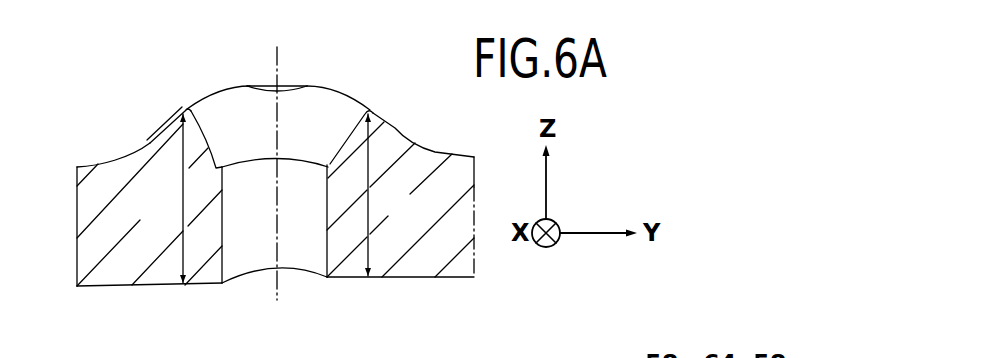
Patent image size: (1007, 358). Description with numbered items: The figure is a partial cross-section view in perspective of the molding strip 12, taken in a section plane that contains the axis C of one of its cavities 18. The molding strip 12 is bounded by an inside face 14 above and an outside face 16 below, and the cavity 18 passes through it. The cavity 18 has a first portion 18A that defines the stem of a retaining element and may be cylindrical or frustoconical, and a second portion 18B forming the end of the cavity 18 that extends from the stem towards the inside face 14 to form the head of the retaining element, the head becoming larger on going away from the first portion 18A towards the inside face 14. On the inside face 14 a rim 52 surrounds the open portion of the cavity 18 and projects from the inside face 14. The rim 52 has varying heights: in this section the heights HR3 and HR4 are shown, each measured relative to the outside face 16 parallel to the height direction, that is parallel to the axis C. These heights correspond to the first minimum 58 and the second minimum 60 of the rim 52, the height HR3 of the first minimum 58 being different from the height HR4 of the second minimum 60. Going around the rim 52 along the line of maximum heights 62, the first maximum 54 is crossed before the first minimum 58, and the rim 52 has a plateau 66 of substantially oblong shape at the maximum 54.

The molding strip 12 is at (77, 218).
The inside face 14 is at (106, 161).
The outside face 16 is at (136, 288).
The cavity 18 is at (250, 244).
The first portion 18A is at (303, 269).
The second portion 18B is at (327, 121).
The rim 52 is at (376, 118).
The first maximum 54 is at (297, 82).
The first minimum 58 is at (182, 107).
The second minimum 60 is at (374, 108).
The line of maximum heights 62 is at (217, 92).
The plateau 66 is at (268, 85).
The axis C is at (279, 160).
The height HR3 is at (162, 198).
The height HR4 is at (389, 195).